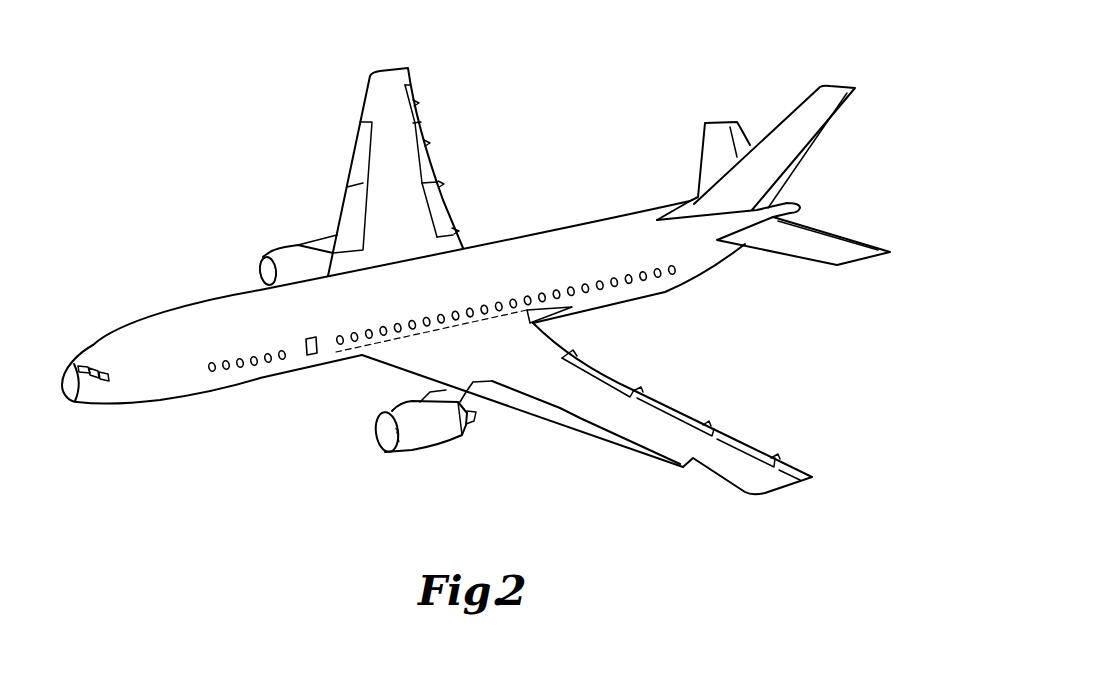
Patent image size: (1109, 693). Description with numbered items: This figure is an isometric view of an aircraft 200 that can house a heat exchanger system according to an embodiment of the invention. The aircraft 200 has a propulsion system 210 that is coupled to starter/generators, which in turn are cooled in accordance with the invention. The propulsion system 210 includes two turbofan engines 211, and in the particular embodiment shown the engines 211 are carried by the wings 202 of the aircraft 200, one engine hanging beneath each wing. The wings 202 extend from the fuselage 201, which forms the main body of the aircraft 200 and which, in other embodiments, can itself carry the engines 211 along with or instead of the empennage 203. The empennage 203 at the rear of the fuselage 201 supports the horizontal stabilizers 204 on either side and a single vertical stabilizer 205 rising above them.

The aircraft 200 is at (476, 306).
The fuselage 201 is at (293, 367).
The wings 202 is at (362, 100).
The empennage 203 is at (709, 188).
The horizontal stabilizers 204 is at (713, 137).
The vertical stabilizer 205 is at (800, 118).
The propulsion system 210 is at (321, 495).
The turbofan engines 211 is at (265, 256).